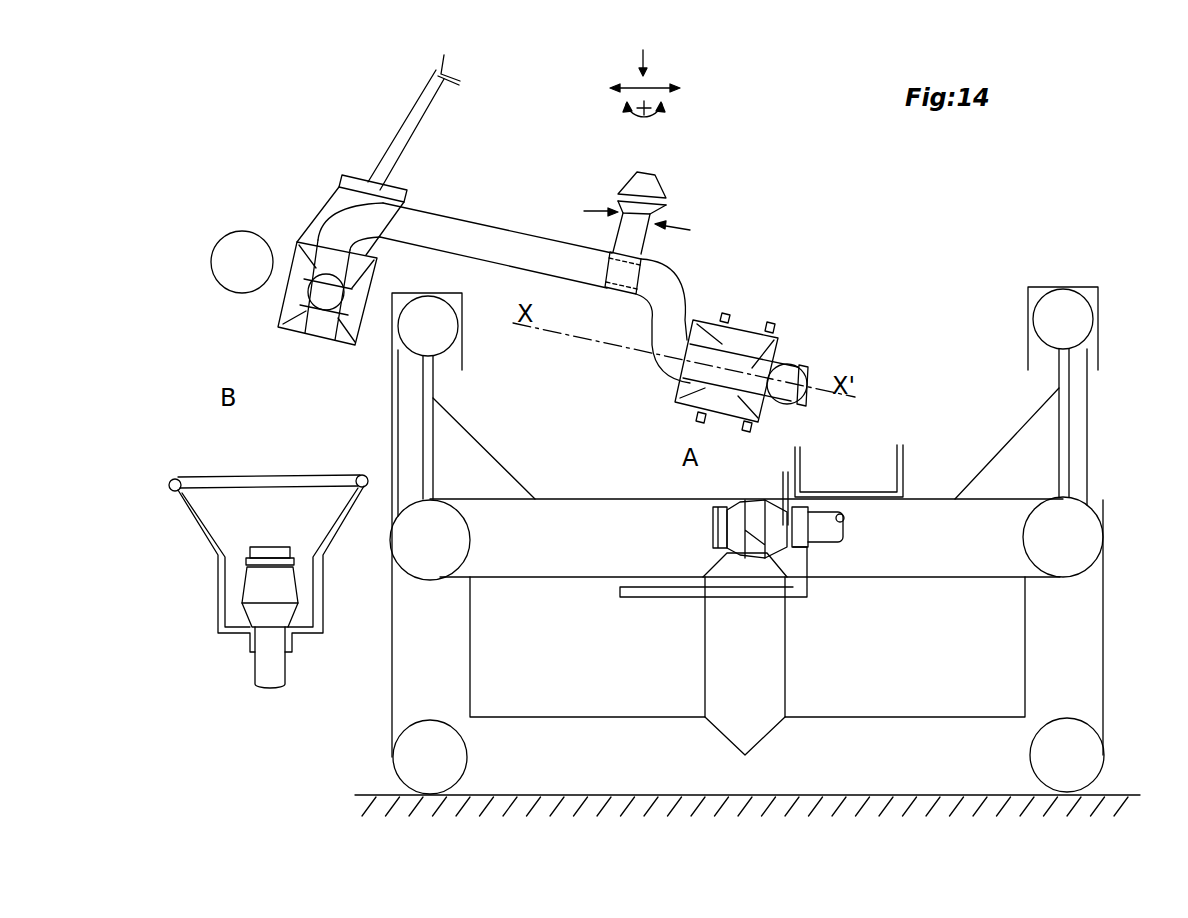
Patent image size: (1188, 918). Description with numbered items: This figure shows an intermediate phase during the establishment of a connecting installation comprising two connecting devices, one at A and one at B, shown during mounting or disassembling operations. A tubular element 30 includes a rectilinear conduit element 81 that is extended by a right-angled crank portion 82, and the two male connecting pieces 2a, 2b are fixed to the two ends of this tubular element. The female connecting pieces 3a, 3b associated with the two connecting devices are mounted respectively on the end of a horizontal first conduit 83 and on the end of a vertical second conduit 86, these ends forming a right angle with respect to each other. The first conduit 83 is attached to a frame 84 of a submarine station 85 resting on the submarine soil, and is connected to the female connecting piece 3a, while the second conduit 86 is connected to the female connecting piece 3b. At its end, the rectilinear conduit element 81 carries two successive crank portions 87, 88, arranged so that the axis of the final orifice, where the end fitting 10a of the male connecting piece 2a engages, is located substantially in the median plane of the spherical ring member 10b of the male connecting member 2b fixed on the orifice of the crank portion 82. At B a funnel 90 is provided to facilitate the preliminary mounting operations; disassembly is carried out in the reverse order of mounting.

The nozzle head assembly 30 is at (513, 232).
The rectilinear conduit element 81 is at (472, 233).
The right angled crank portion 82 is at (343, 223).
The male connecting piece 2b is at (298, 307).
The spherical ring member 10b is at (302, 292).
The crank portion 87 is at (672, 272).
The crank portion 88 is at (683, 335).
The male connecting piece 2a is at (782, 352).
The nozzle cylinder 10a is at (797, 361).
The first conduit 83 is at (822, 522).
The frame 84 is at (921, 490).
The female connecting piece 3a is at (752, 538).
The submarine station 85 is at (1110, 643).
The funnel 90 is at (213, 551).
The female connecting piece 3b is at (241, 588).
The second conduit 86 is at (253, 668).